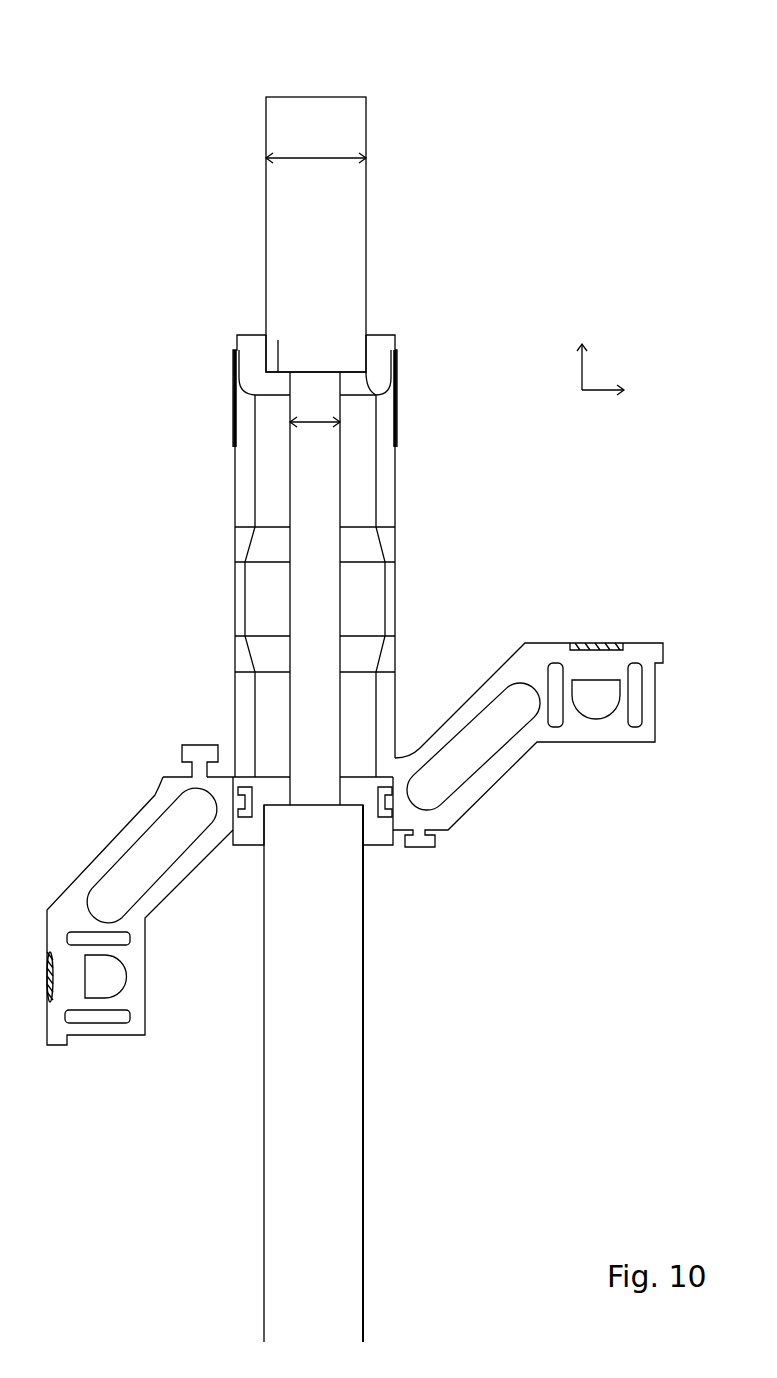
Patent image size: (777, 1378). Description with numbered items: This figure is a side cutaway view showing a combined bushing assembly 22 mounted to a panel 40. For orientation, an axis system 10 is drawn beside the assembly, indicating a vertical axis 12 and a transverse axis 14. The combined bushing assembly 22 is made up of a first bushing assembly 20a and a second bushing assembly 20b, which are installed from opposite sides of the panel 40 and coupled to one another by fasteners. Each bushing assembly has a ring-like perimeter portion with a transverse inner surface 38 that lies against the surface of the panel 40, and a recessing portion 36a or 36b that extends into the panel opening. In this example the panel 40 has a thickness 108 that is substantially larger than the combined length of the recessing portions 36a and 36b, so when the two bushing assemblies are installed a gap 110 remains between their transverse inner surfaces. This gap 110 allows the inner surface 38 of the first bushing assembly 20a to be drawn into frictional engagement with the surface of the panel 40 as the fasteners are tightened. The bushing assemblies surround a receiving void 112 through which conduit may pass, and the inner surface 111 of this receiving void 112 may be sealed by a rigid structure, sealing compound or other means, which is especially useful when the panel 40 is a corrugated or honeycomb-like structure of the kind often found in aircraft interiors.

The axis system 10 is at (607, 357).
The vertical axis 12 is at (582, 354).
The transverse axis 14 is at (617, 389).
The first bushing assembly 20a is at (397, 357).
The second bushing assembly 20b is at (232, 367).
The combined bushing assembly 22 is at (415, 640).
The recessing portion 36a is at (350, 375).
The recessing portion 36b is at (270, 353).
The transverse inner surface 38 is at (267, 352).
The panel 40 is at (368, 192).
The thickness 108 is at (308, 158).
The gap 110 is at (300, 430).
The inner surface 111 is at (310, 807).
The receiving void 112 is at (313, 370).